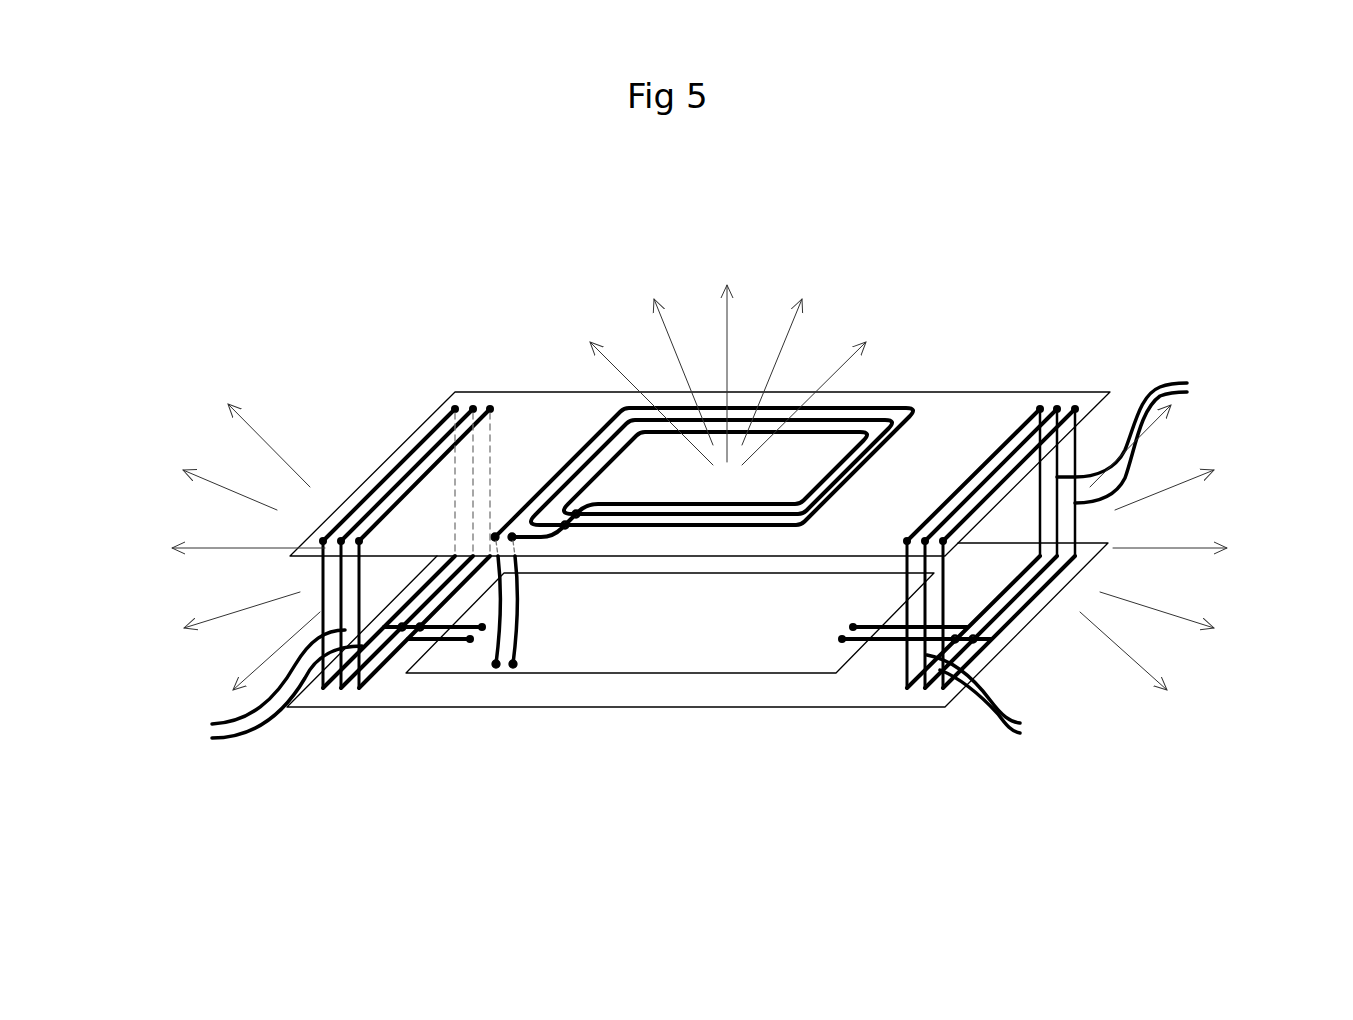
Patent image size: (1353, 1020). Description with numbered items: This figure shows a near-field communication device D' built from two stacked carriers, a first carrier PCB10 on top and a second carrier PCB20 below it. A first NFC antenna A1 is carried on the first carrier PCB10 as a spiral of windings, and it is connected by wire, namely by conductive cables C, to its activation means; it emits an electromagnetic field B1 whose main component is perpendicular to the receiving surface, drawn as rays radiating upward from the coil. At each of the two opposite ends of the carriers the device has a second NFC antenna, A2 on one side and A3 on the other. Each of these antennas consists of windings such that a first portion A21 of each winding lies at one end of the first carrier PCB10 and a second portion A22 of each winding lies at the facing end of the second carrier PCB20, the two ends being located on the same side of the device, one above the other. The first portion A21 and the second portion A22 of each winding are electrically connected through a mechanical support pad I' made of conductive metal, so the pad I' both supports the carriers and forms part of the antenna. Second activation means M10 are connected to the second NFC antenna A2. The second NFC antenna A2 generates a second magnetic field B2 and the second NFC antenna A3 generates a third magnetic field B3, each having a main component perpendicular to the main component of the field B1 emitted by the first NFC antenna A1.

The near-field communication device D' is at (700, 486).
The first carrier PCB10 is at (995, 388).
The second carrier PCB20 is at (697, 671).
The second activation means M10 is at (742, 674).
The first NFC antenna A1 is at (874, 400).
The second NFC antenna A2 is at (324, 502).
The second NFC antenna A3 is at (1010, 559).
The first portion of each winding A21 is at (420, 446).
The second portion of each winding A22 is at (375, 660).
The electromagnetic field B1 is at (728, 371).
The second magnetic field B2 is at (223, 547).
The third magnetic field B3 is at (1179, 547).
The conductive cables C is at (513, 617).
The mechanical support pads I' is at (695, 561).